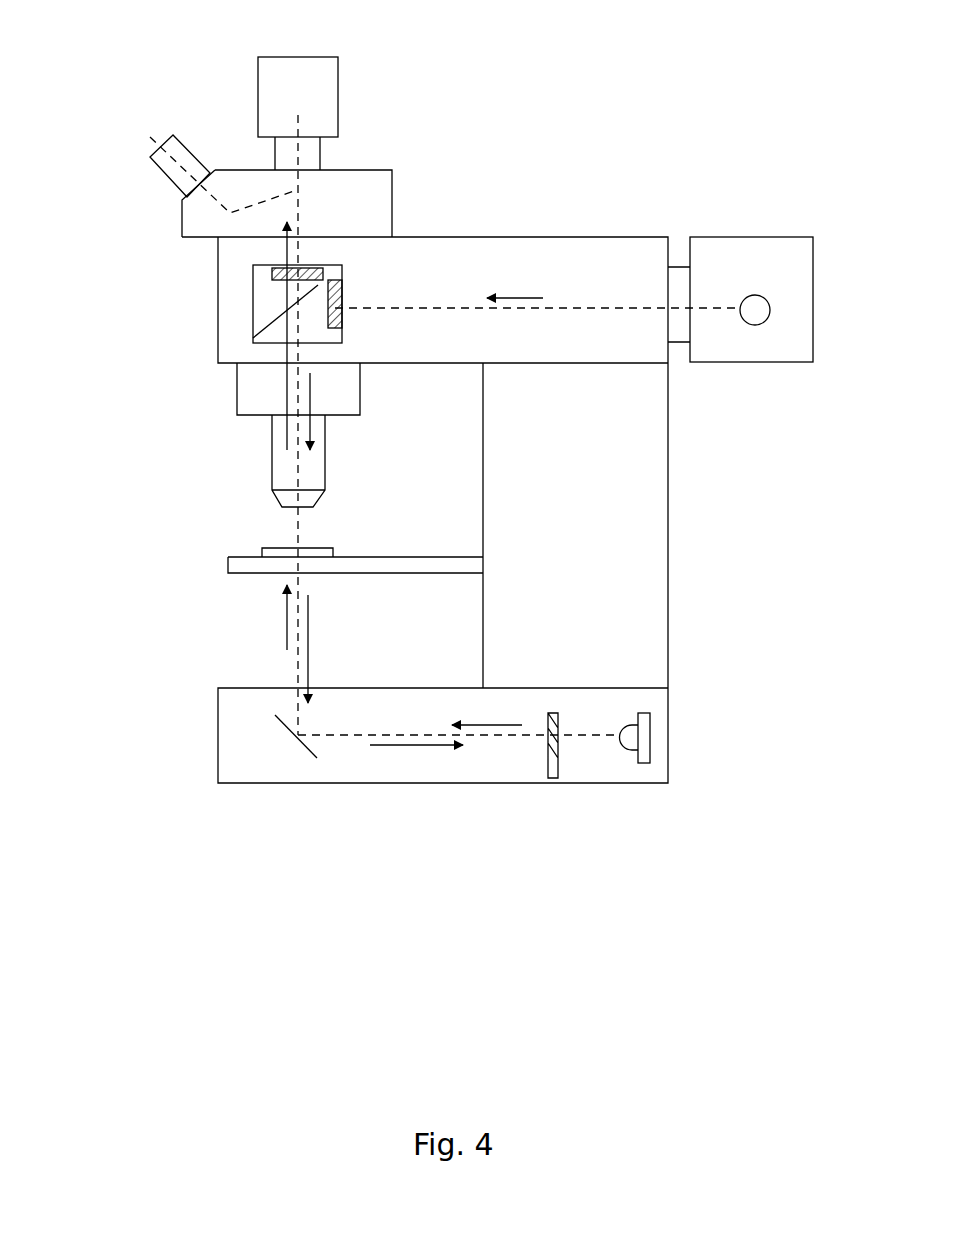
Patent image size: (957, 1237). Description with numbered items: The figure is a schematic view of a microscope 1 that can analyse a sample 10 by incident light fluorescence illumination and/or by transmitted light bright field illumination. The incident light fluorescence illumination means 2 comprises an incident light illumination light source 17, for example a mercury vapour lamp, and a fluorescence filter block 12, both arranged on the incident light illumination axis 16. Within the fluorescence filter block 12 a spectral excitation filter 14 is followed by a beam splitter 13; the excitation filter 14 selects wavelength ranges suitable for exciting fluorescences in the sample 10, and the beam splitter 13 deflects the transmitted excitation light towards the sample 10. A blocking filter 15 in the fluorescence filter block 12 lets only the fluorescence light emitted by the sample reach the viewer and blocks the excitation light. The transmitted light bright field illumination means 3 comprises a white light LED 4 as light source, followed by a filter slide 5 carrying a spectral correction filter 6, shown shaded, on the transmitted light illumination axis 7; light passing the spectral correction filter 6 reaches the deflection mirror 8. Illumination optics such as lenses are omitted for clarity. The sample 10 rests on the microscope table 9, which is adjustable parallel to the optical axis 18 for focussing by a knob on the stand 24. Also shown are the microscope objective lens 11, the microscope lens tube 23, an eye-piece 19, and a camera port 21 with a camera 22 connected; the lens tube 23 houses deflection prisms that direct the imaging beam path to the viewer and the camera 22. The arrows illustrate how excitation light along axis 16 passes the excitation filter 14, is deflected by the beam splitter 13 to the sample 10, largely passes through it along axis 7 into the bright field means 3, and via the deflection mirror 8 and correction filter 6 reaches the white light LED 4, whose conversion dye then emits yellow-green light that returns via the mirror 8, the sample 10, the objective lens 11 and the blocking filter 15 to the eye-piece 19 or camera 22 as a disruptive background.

The microscope 1 is at (588, 87).
The incident light fluorescence illumination means 2 is at (627, 255).
The transmitted light bright field illumination means 3 is at (393, 762).
The white light LED 4 is at (647, 748).
The filter slide 5 is at (565, 768).
The spectral correction filter 6 is at (548, 735).
The transmitted light illumination axis 7 is at (495, 735).
The deflection mirror 8 is at (313, 753).
The microscope table 9 is at (228, 575).
The sample 10 is at (265, 550).
The microscope objective lens 11 is at (270, 432).
The fluorescence filter block 12 is at (252, 268).
The beam splitter 13 is at (252, 338).
The spectral excitation filter 14 is at (337, 322).
The blocking filter 15 is at (317, 266).
The incident light illumination axis 16 is at (452, 310).
The incident light illumination light source 17 is at (750, 298).
The optical axis 18 is at (298, 527).
The eye-piece 19 is at (162, 178).
The camera port 21 is at (318, 157).
The camera 22 is at (317, 72).
The microscope lens tube 23 is at (245, 167).
The stand 24 is at (655, 465).